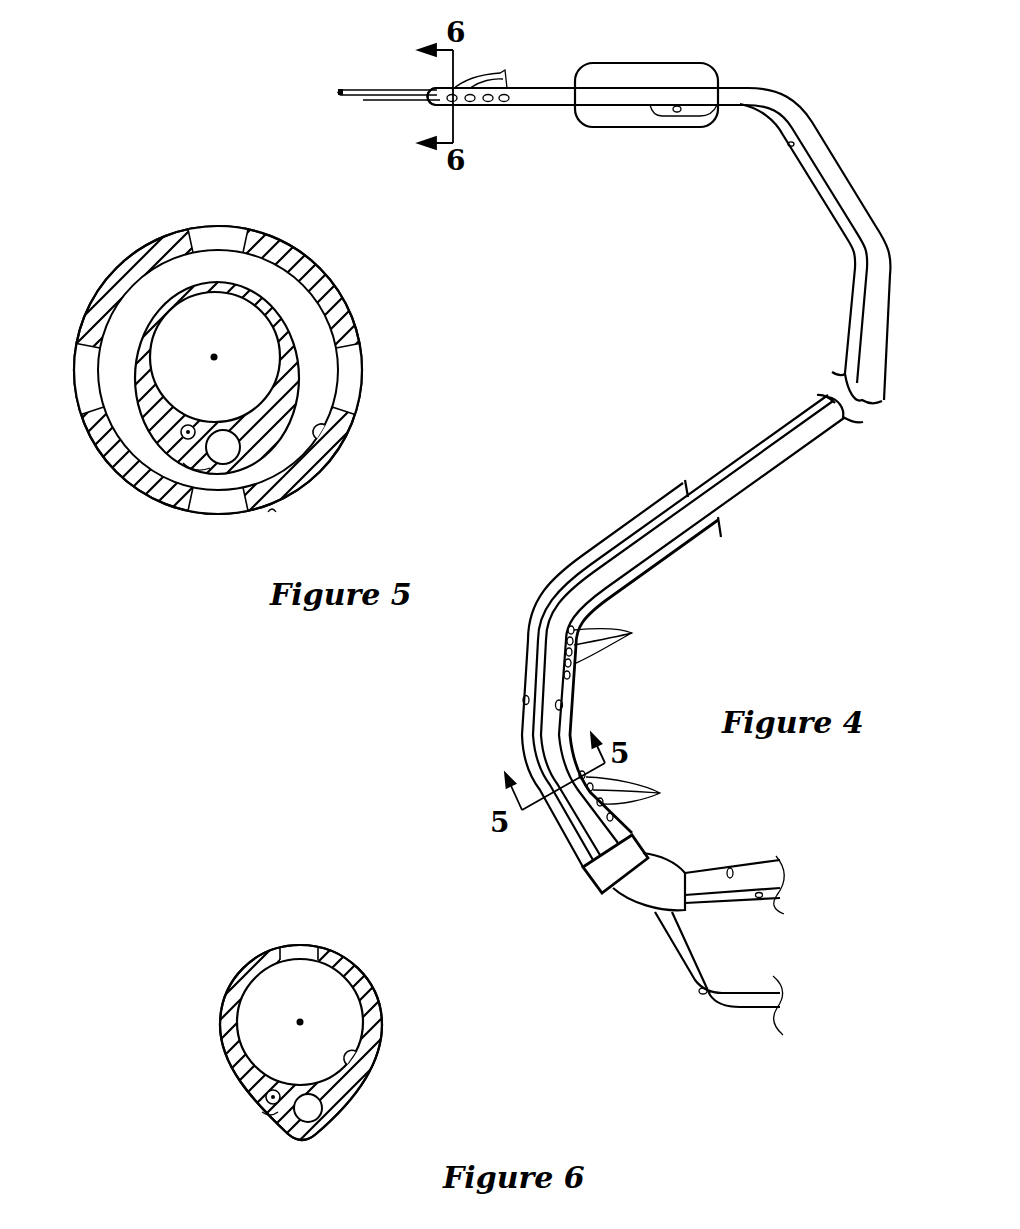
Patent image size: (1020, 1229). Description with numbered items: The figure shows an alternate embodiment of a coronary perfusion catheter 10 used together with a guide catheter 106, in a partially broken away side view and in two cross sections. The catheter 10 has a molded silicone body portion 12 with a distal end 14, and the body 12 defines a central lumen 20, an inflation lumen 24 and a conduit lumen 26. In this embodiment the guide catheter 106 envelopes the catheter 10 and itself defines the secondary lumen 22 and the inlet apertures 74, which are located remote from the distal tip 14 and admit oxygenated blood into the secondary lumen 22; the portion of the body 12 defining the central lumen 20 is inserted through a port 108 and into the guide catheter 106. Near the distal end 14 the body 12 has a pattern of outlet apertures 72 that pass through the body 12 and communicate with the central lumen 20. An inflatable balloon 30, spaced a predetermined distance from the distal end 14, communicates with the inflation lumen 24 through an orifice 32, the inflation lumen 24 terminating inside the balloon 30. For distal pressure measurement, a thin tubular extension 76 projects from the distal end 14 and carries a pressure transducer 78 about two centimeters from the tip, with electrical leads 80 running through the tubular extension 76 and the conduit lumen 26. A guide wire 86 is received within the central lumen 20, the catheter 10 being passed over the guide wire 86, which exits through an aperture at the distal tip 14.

In FIG. 4, the catheter 10 is at (770, 423).
In FIG. 5, the catheter 10 is at (120, 250).
In FIG. 6, the catheter 10 is at (243, 958).
In FIG. 4, the body portion 12 is at (764, 480).
In FIG. 5, the body portion 12 is at (186, 290).
In FIG. 6, the body portion 12 is at (372, 990).
In FIG. 4, the distal end 14 is at (428, 107).
In FIG. 4, the central lumen 20 is at (703, 995).
In FIG. 5, the central lumen 20 is at (264, 330).
In FIG. 6, the central lumen 20 is at (356, 1060).
In FIG. 4, the secondary lumen 22 is at (563, 706).
In FIG. 5, the secondary lumen 22 is at (330, 437).
In FIG. 4, the inflation lumen 24 is at (790, 145).
In FIG. 5, the inflation lumen 24 is at (243, 452).
In FIG. 6, the inflation lumen 24 is at (307, 1122).
In FIG. 5, the conduit lumen 26 is at (185, 462).
In FIG. 6, the conduit lumen 26 is at (260, 1113).
In FIG. 4, the inflatable balloon 30 is at (636, 62).
In FIG. 4, the orifice 32 is at (677, 114).
In FIG. 4, the outlet apertures 72 is at (484, 74).
In FIG. 6, the outlet apertures 72 is at (296, 947).
In FIG. 4, the inlet apertures 74 is at (628, 721).
In FIG. 5, the inlet apertures 74 is at (213, 235).
In FIG. 4, the tubular extension 76 is at (385, 88).
In FIG. 4, the pressure transducer 78 is at (342, 90).
In FIG. 5, the electrical leads 80 is at (181, 431).
In FIG. 6, the electrical leads 80 is at (266, 1096).
In FIG. 4, the guide wire 86 is at (364, 104).
In FIG. 5, the guide wire 86 is at (216, 359).
In FIG. 6, the guide wire 86 is at (301, 1020).
In FIG. 4, the guide catheter 106 is at (524, 700).
In FIG. 5, the guide catheter 106 is at (272, 512).
In FIG. 4, the port 108 is at (643, 888).